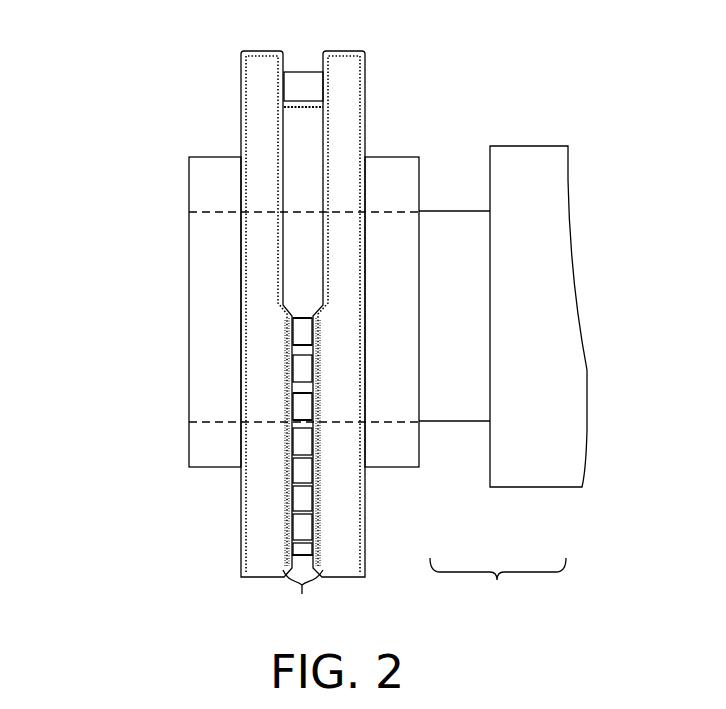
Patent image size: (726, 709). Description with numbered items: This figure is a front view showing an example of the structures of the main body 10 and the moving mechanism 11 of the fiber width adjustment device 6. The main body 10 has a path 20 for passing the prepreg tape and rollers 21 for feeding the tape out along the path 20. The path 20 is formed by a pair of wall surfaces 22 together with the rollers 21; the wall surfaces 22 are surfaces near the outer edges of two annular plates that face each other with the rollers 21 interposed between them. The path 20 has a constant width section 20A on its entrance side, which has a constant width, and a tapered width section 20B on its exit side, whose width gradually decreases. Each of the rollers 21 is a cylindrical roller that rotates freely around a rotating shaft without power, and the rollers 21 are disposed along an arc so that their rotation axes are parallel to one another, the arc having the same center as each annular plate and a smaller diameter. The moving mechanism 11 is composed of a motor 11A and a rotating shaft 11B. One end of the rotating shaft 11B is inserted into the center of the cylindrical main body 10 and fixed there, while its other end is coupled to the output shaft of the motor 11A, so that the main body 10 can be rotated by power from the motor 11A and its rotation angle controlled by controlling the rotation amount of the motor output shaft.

The fiber width adjustment device 6 is at (80, 132).
The main body 10 is at (236, 122).
The moving mechanism 11 is at (498, 585).
The motor 11A is at (545, 487).
The rotating shaft 11B is at (439, 421).
The path 20 is at (300, 523).
The constant width section 20A is at (346, 31).
The tapered width section 20B is at (302, 350).
The rollers 21 is at (302, 405).
The wall surfaces 22 is at (303, 598).